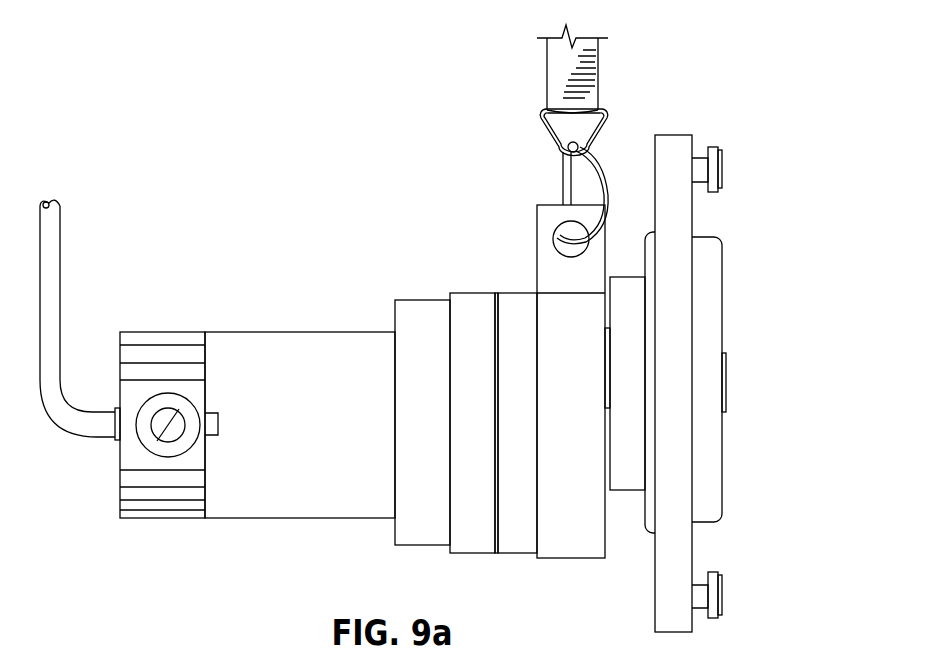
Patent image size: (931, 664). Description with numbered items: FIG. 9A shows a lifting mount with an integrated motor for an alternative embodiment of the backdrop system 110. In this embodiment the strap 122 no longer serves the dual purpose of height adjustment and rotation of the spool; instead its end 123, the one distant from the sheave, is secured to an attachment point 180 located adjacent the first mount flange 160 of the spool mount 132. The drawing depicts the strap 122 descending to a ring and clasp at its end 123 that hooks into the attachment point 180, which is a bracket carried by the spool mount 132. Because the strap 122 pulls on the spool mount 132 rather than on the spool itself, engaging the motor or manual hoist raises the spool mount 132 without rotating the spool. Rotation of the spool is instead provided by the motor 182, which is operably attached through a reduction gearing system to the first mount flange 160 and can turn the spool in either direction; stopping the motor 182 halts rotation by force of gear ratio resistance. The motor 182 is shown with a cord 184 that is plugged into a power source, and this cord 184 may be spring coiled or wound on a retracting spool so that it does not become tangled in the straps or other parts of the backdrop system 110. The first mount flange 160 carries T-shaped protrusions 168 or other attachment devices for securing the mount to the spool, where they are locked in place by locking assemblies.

The backdrop system 110 is at (460, 323).
The strap 122 is at (616, 46).
The strap end 123 is at (549, 85).
The spool mount 132 is at (774, 344).
The first mount flange 160 is at (709, 124).
The T-shaped protrusion 168 is at (715, 167).
The attachment point 180 is at (516, 239).
The motor 182 is at (278, 338).
The cord 184 is at (60, 272).